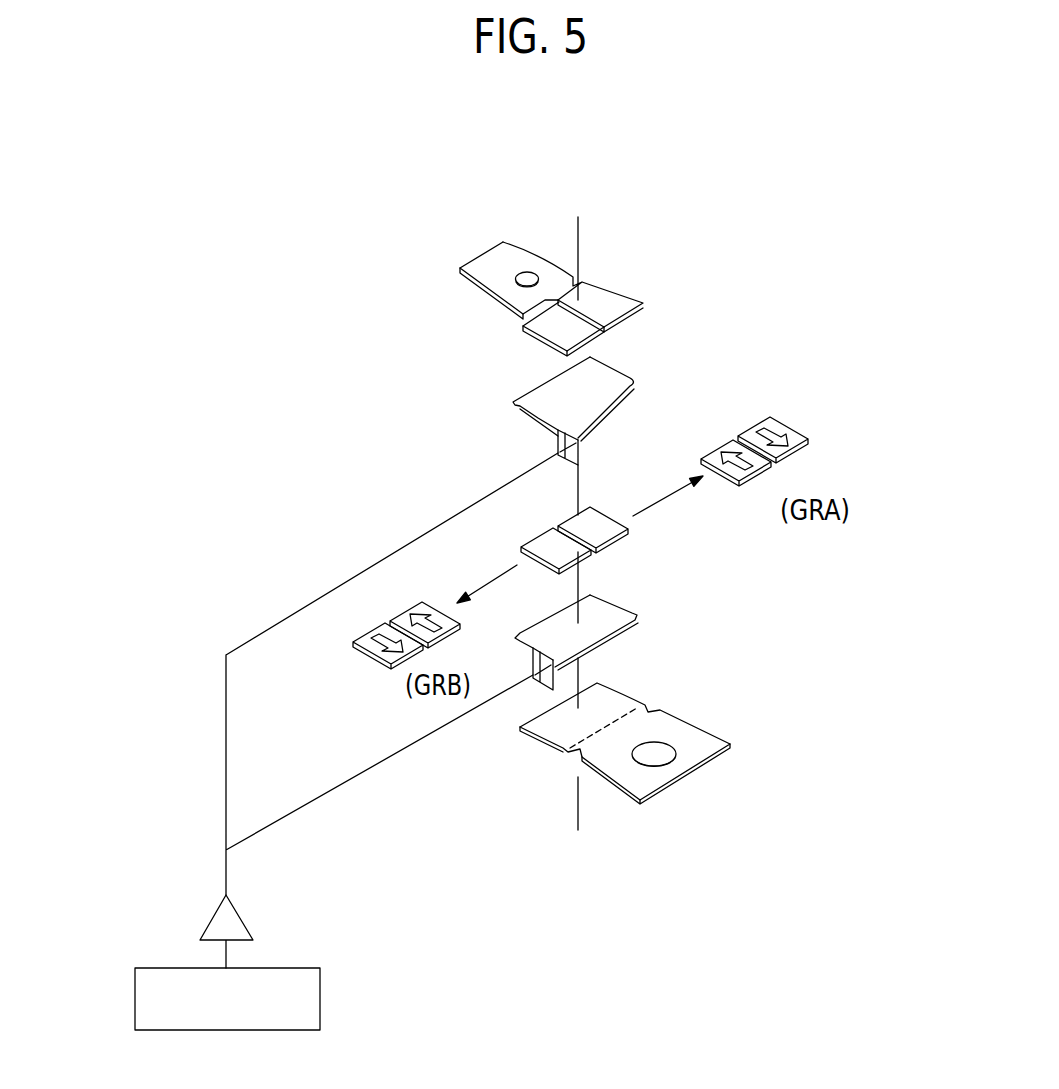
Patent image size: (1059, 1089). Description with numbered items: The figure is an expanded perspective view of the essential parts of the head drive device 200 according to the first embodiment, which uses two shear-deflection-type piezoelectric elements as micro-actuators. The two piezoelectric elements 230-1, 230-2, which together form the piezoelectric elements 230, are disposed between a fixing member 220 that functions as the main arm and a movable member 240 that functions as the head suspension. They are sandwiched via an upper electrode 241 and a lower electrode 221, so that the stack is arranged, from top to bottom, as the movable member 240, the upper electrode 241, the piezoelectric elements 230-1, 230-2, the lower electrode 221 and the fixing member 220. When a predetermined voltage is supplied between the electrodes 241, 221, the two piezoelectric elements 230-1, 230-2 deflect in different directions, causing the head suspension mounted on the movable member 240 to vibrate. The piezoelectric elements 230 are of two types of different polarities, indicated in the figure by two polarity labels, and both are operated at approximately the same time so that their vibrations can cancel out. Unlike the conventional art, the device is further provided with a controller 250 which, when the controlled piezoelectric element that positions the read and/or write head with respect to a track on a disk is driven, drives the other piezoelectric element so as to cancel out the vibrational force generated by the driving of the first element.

The head drive device 200 is at (713, 198).
The movable member 240 is at (632, 293).
The upper electrode 241 is at (632, 380).
The piezoelectric elements 230 is at (622, 553).
The piezoelectric element 230-1 is at (597, 512).
The piezoelectric element 230-2 is at (522, 548).
The lower electrode 221 is at (637, 616).
The fixing member 220 is at (718, 726).
The controller 250 is at (320, 997).